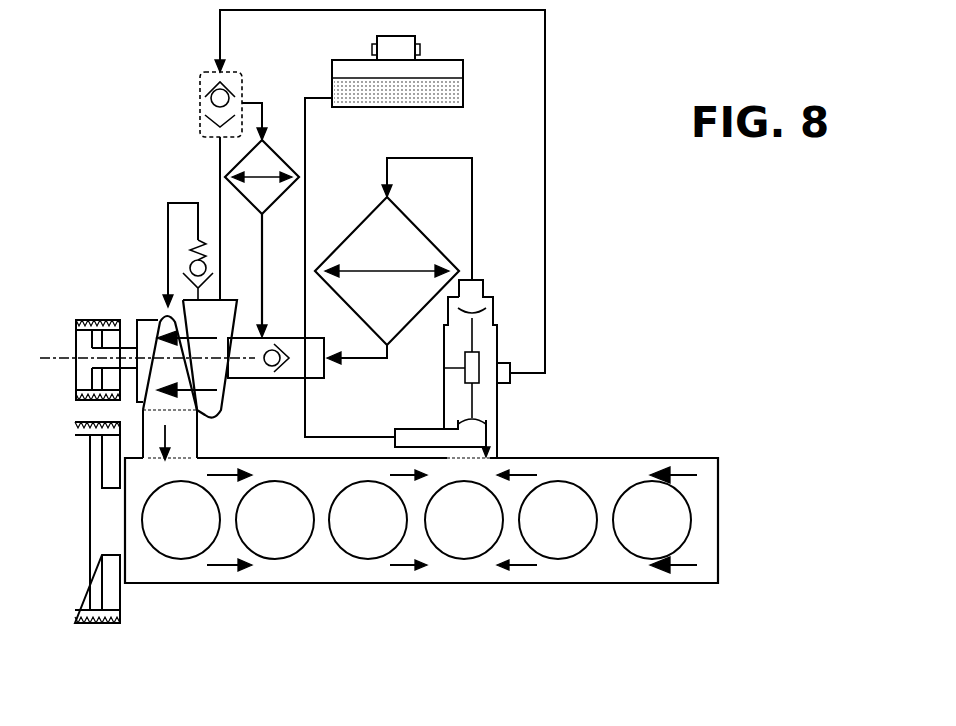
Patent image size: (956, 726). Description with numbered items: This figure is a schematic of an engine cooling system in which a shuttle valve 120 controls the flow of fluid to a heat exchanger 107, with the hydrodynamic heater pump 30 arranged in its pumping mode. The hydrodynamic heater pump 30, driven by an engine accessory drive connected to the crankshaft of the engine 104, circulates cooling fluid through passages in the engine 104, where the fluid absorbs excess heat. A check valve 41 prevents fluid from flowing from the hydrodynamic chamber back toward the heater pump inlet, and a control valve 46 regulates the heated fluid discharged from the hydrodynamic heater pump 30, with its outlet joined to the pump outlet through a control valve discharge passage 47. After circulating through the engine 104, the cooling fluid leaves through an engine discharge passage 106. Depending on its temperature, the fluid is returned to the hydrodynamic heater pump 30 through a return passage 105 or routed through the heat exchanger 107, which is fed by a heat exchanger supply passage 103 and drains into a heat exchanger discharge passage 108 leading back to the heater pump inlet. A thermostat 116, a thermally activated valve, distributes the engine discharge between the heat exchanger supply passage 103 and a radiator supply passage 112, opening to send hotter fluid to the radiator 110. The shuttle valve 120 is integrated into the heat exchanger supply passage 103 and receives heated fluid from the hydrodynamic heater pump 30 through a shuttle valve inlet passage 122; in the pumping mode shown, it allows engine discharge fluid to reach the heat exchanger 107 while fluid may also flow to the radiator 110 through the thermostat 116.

The hydrodynamic heater pump 30 is at (218, 418).
The check valve 41 is at (296, 366).
The control valve 46 is at (170, 258).
The control valve discharge passage 47 is at (180, 200).
The heat exchanger supply passage 103 is at (545, 100).
The engine 104 is at (510, 585).
The return passage 105 is at (328, 437).
The engine discharge passage 106 is at (497, 422).
The heat exchanger 107 is at (277, 157).
The heat exchanger discharge passage 108 is at (302, 213).
The radiator 110 is at (423, 220).
The radiator supply passage 112 is at (472, 245).
The thermostat 116 is at (497, 350).
The shuttle valve 120 is at (200, 86).
The shuttle valve inlet passage 122 is at (219, 168).